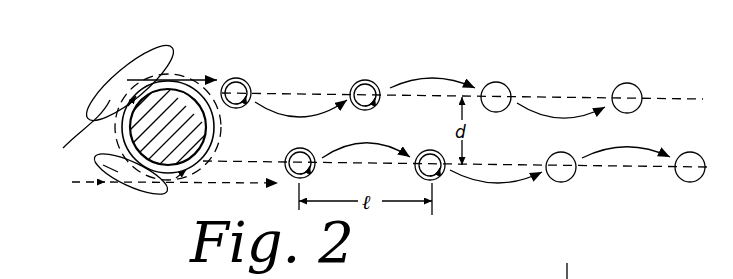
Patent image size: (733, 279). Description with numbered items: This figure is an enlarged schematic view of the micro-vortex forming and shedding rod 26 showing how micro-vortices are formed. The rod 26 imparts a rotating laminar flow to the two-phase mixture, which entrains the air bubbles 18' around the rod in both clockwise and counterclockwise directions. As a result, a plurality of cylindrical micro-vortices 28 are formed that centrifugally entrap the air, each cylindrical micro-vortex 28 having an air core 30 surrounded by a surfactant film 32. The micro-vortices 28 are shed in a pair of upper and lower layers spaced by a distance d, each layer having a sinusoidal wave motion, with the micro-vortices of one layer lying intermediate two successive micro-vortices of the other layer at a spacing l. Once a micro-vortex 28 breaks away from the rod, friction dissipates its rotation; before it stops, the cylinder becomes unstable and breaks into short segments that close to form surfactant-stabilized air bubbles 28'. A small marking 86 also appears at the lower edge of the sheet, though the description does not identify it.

The rod 26 is at (178, 118).
The air bubbles 18' is at (109, 118).
The cylindrical micro-vortices 28 is at (286, 112).
The surfactant film 32 is at (380, 87).
The air core 30 is at (363, 108).
The surfactant-stabilized air bubbles 28' is at (593, 136).
The element 86 is at (573, 278).